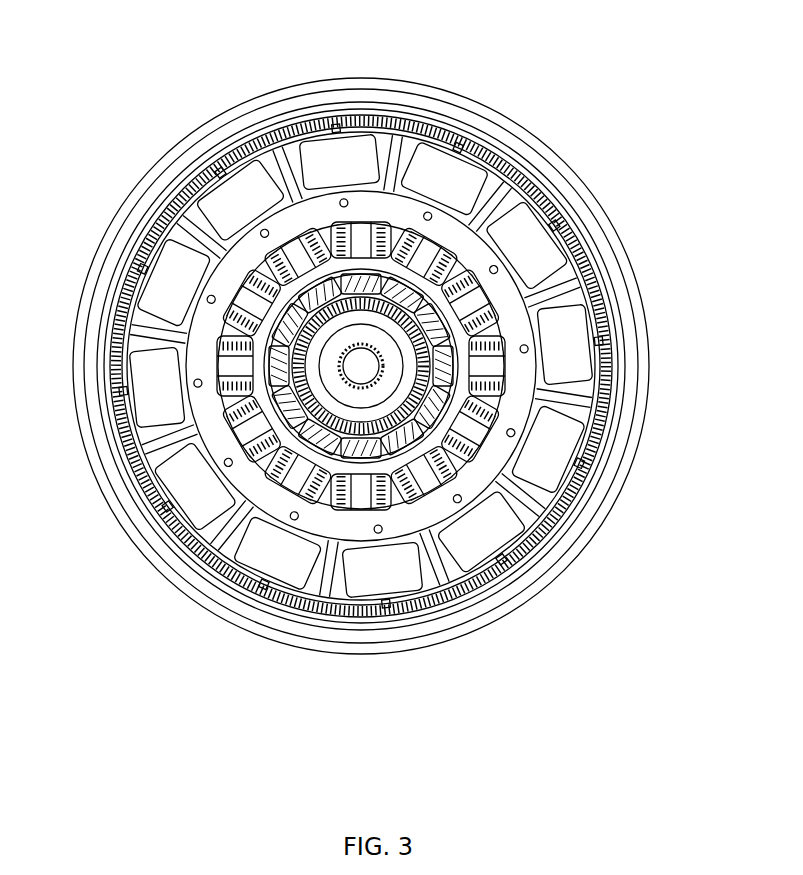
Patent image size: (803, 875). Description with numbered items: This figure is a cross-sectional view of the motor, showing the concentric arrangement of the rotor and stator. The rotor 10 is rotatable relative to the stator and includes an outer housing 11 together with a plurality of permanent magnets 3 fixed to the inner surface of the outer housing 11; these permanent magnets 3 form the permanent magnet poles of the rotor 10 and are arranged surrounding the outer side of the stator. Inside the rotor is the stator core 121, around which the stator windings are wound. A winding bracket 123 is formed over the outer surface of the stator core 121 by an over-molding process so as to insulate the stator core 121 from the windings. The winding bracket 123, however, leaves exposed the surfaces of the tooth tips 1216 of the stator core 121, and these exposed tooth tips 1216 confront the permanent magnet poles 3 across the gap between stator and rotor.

The permanent magnets 3 is at (587, 212).
The rotor 10 is at (452, 92).
The outer housing 11 is at (178, 143).
The stator core 121 is at (237, 460).
The winding bracket 123 is at (483, 467).
The tooth tips 1216 is at (603, 345).